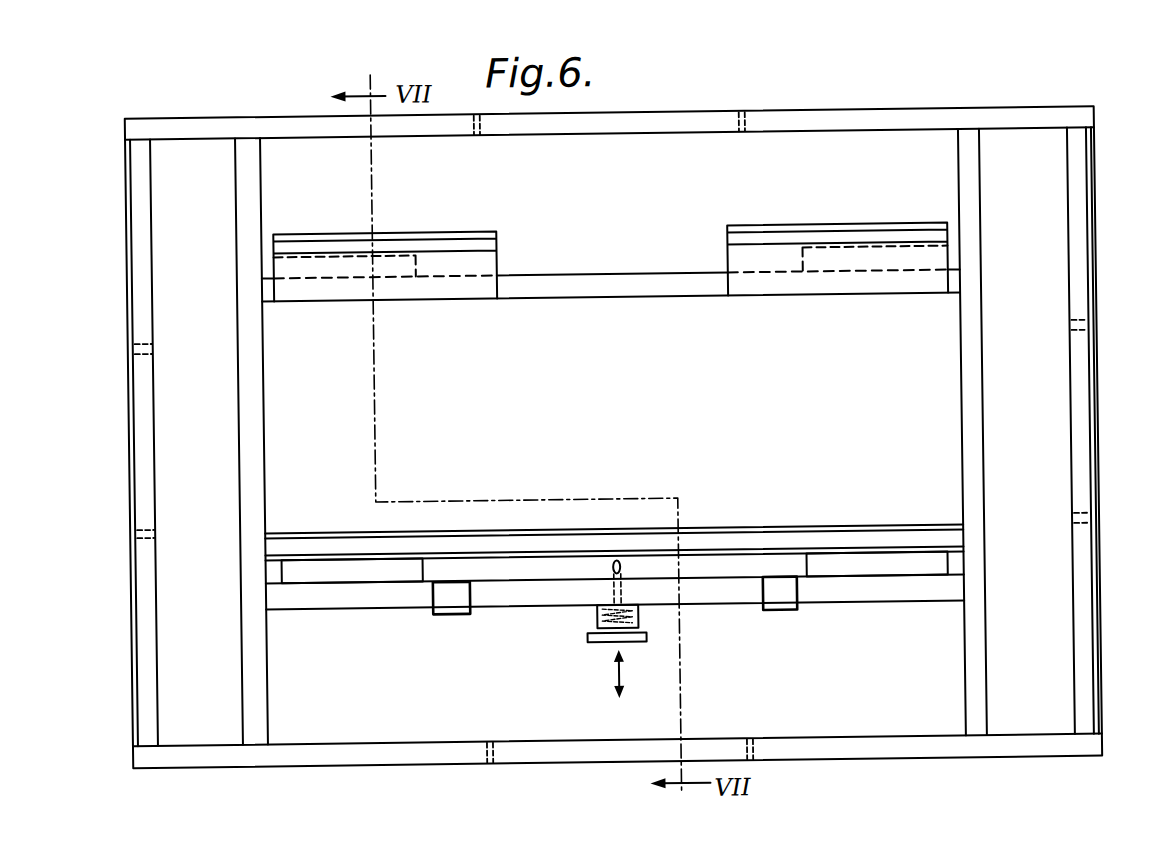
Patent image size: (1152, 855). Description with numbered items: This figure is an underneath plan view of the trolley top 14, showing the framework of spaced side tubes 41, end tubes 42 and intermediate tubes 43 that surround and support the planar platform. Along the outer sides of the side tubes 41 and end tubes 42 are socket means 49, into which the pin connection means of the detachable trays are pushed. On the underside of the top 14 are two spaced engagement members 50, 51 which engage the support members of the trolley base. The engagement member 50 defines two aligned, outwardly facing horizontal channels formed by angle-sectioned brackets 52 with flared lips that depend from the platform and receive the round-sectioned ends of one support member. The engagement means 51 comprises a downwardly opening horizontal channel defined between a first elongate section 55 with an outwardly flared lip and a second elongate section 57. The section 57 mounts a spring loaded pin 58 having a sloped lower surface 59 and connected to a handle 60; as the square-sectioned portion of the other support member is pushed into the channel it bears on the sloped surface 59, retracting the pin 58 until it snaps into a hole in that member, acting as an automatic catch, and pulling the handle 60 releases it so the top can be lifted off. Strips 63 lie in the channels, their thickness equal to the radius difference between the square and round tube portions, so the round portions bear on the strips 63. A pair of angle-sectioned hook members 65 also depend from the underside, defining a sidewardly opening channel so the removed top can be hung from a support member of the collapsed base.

The trolley top 14 is at (201, 220).
The side tubes 41 is at (257, 115).
The end tubes 42 is at (150, 399).
The intermediate tubes 43 is at (255, 400).
The socket means 49 is at (487, 123).
The engagement member 50 is at (682, 306).
The engagement means 51 is at (741, 524).
The angle-sectioned brackets 52 is at (437, 270).
The first elongate section 55 is at (514, 532).
The second elongate section 57 is at (376, 595).
The spring loaded pin 58 is at (618, 597).
The sloped lower surface 59 is at (611, 567).
The handle 60 is at (584, 637).
The strips 63 is at (843, 253).
The hook members 65 is at (446, 605).